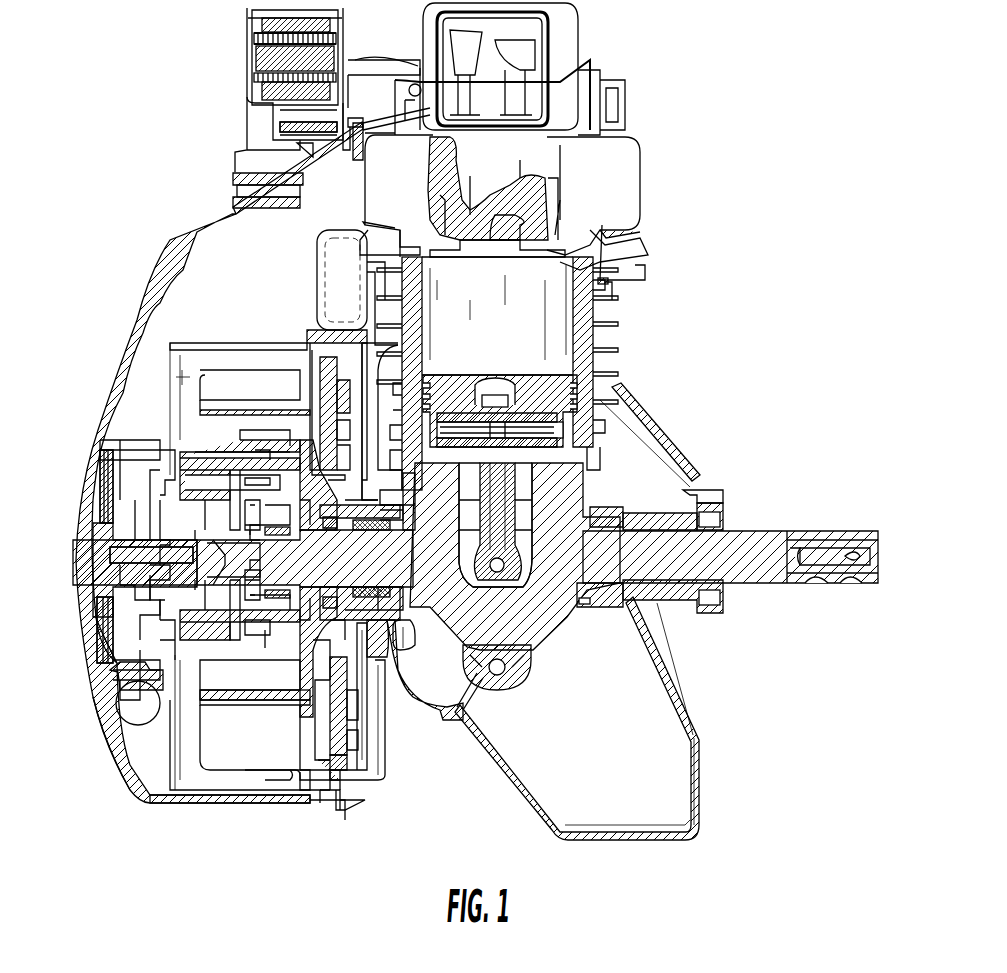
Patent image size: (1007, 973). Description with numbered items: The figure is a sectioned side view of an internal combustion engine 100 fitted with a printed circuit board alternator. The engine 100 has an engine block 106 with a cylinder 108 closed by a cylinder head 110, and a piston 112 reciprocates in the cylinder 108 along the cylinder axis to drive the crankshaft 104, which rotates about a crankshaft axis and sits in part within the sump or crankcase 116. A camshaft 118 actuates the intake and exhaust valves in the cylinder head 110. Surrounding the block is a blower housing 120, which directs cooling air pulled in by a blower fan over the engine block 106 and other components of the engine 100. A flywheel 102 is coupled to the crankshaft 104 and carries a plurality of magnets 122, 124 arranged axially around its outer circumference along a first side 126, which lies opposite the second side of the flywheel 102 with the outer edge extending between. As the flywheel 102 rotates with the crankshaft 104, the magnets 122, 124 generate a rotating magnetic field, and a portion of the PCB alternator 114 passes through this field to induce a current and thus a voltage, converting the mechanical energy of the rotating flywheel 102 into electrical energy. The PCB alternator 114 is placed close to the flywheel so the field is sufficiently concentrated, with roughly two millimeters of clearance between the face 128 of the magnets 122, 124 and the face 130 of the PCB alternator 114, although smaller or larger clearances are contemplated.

The internal combustion engine 100 is at (131, 91).
The flywheel 102 is at (330, 758).
The crankshaft 104 is at (745, 588).
The engine block 106 is at (178, 248).
The cylinder 108 is at (598, 331).
The cylinder head 110 is at (580, 213).
The piston 112 is at (555, 282).
The PCB alternator 114 is at (360, 718).
The crankcase 116 is at (694, 692).
The camshaft 118 is at (498, 508).
The blower housing 120 is at (92, 688).
The magnet 122 is at (335, 398).
The magnet 124 is at (354, 728).
The first side 126 is at (297, 447).
The face of the magnets 128 is at (350, 700).
The face of the PCB alternator 130 is at (352, 668).